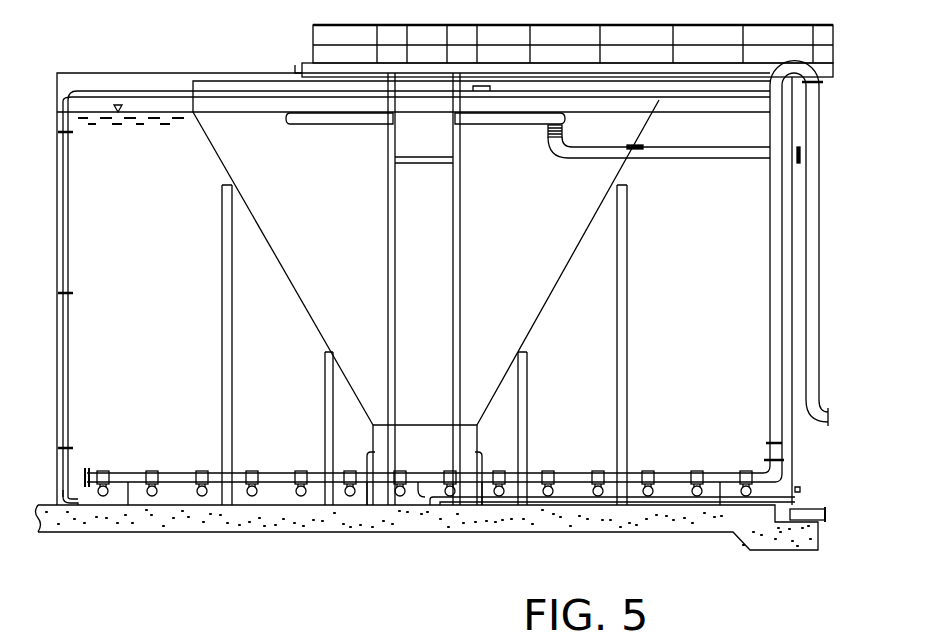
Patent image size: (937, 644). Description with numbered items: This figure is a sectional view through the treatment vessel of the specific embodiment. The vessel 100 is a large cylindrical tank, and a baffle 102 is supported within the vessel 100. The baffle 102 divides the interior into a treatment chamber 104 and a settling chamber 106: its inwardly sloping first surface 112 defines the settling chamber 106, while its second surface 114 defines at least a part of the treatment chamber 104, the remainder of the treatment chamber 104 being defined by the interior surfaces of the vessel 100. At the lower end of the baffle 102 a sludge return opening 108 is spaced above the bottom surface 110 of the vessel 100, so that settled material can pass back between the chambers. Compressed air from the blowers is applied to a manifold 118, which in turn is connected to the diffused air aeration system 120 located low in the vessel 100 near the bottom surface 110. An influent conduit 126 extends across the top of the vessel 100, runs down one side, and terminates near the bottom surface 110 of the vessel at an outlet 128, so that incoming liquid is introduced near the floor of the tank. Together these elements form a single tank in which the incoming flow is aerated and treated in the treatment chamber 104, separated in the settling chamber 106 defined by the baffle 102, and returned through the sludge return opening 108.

The vessel 100 is at (796, 474).
The baffle 102 is at (214, 153).
The treatment chamber 104 is at (167, 281).
The settling chamber 106 is at (345, 222).
The sludge return opening 108 is at (378, 487).
The bottom surface 110 is at (275, 506).
The first surface 112 is at (291, 281).
The second surface 114 is at (312, 318).
The manifold 118 is at (818, 332).
The diffused air aeration system 120 is at (567, 477).
The influent conduit 126 is at (160, 91).
The outlet 128 is at (84, 524).